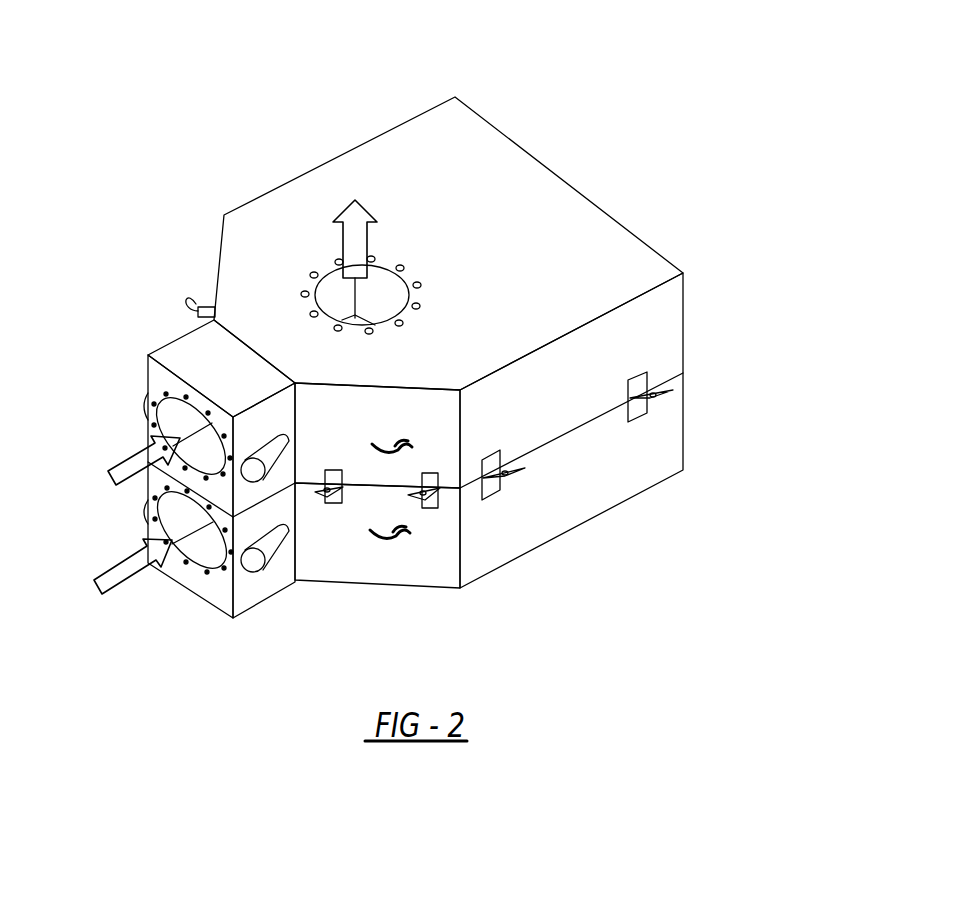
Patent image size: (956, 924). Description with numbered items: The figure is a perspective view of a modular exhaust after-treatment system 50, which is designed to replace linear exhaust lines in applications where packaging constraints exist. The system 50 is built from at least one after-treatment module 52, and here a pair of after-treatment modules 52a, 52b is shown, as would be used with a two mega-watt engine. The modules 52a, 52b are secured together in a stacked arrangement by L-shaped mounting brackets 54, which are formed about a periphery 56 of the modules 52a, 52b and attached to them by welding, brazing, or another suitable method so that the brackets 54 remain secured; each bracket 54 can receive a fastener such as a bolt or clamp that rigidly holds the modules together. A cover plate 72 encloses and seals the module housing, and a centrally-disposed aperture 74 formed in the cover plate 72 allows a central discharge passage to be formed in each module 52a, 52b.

The modular exhaust after-treatment system 50 is at (186, 127).
The after-treatment module 52 is at (460, 352).
The after-treatment module 52a is at (683, 447).
The after-treatment module 52b is at (683, 360).
The L-shaped mounting bracket 54 is at (508, 482).
The periphery 56 is at (670, 300).
The cover plate 72 is at (478, 143).
The centrally-disposed aperture 74 is at (408, 279).